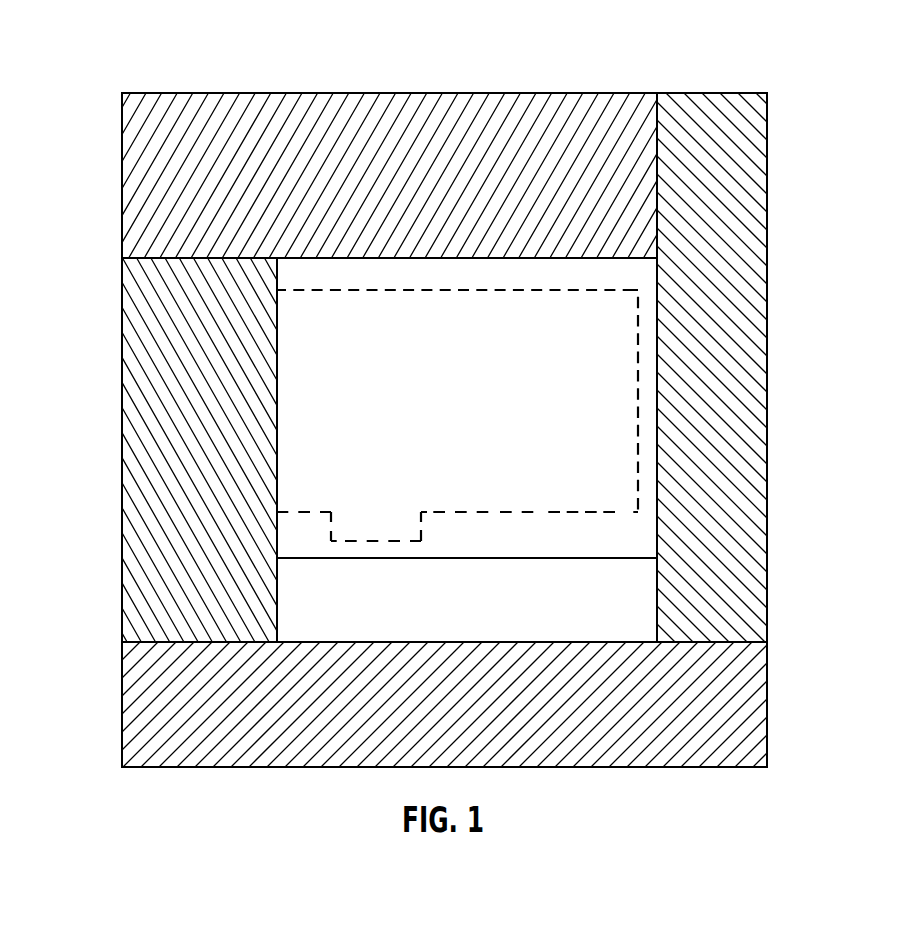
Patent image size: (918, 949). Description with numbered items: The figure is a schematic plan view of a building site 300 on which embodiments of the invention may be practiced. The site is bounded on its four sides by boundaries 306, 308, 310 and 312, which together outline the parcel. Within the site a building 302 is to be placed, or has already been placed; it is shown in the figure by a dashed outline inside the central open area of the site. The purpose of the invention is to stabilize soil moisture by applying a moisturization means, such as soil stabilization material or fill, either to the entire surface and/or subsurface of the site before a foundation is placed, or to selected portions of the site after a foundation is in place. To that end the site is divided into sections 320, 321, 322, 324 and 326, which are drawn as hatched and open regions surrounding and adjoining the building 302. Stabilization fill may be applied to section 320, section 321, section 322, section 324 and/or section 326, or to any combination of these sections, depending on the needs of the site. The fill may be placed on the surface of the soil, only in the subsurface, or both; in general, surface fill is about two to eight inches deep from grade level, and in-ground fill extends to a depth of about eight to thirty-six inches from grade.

The building site 300 is at (126, 46).
The building 302 is at (594, 292).
The boundary 306 is at (767, 372).
The boundary 308 is at (244, 768).
The boundary 310 is at (122, 348).
The boundary 312 is at (300, 93).
The section 320 is at (279, 174).
The section 321 is at (173, 464).
The section 322 is at (688, 386).
The section 324 is at (292, 720).
The section 326 is at (443, 615).